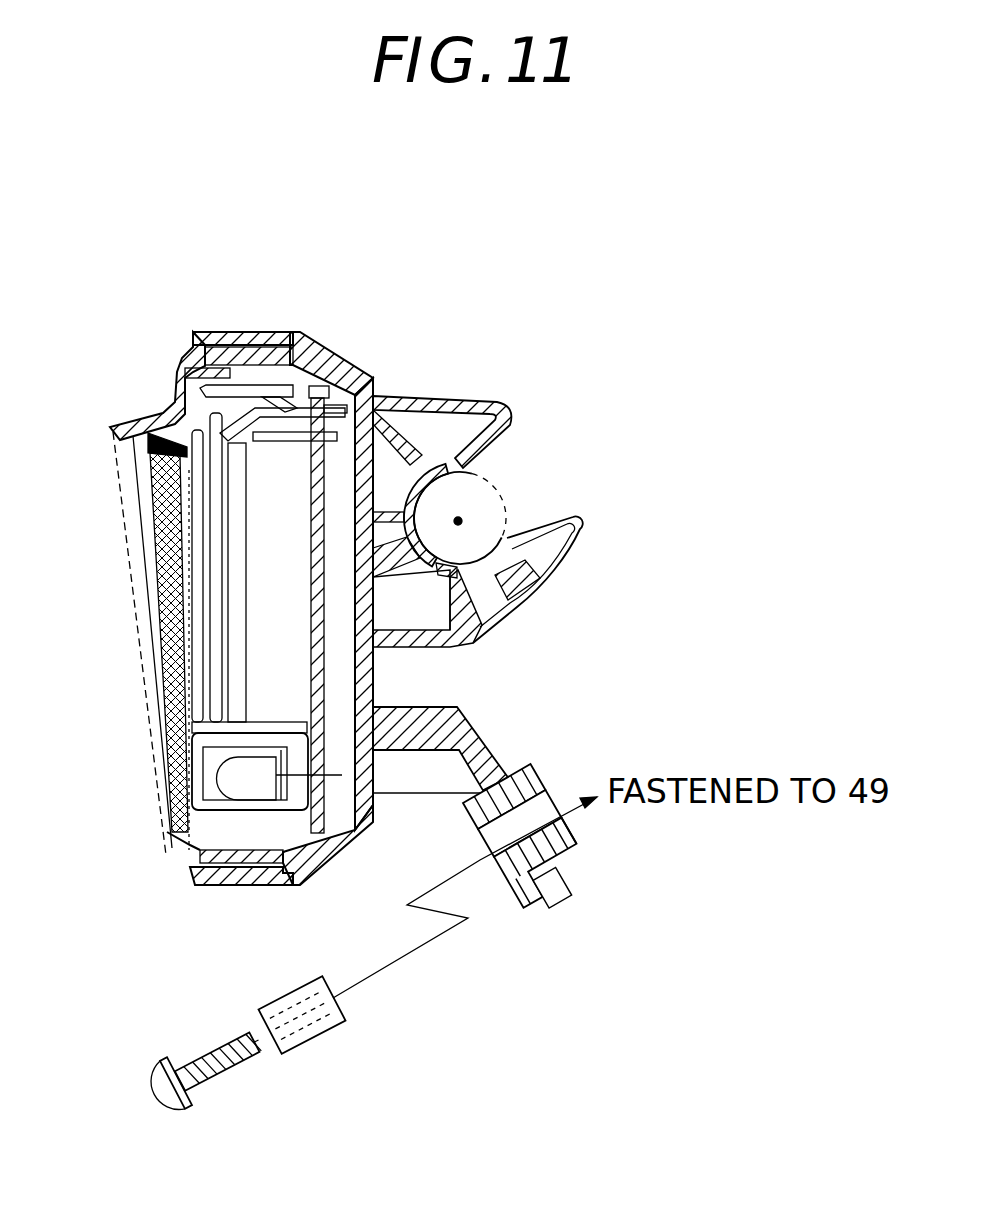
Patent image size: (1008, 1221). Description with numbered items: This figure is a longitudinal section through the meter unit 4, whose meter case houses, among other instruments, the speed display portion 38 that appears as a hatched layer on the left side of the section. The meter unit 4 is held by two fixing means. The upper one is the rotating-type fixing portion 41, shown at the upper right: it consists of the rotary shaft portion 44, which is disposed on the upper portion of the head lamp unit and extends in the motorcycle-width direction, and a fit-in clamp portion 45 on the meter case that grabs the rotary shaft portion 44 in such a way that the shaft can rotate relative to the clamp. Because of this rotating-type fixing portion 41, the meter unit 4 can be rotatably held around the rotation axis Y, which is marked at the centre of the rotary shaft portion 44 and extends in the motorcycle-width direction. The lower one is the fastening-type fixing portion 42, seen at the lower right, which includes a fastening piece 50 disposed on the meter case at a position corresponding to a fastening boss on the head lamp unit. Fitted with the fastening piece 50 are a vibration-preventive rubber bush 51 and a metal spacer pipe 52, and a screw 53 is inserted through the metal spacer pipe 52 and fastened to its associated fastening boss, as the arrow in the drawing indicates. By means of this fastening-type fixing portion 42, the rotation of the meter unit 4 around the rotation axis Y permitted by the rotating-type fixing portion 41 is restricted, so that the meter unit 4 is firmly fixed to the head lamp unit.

The meter unit 4 is at (240, 320).
The speed display portion 38 is at (150, 571).
The rotating-type fixing portion 41 is at (458, 295).
The rotary shaft portion 44 is at (500, 474).
The fit-in clamp portion 45 is at (453, 398).
The fastening piece 50 is at (548, 905).
The fastening-type fixing portion 42 is at (475, 807).
The vibration-preventive rubber bush 51 is at (585, 856).
The metal spacer pipe 52 is at (284, 995).
The screw 53 is at (203, 1065).
The rotation axis Y is at (462, 521).